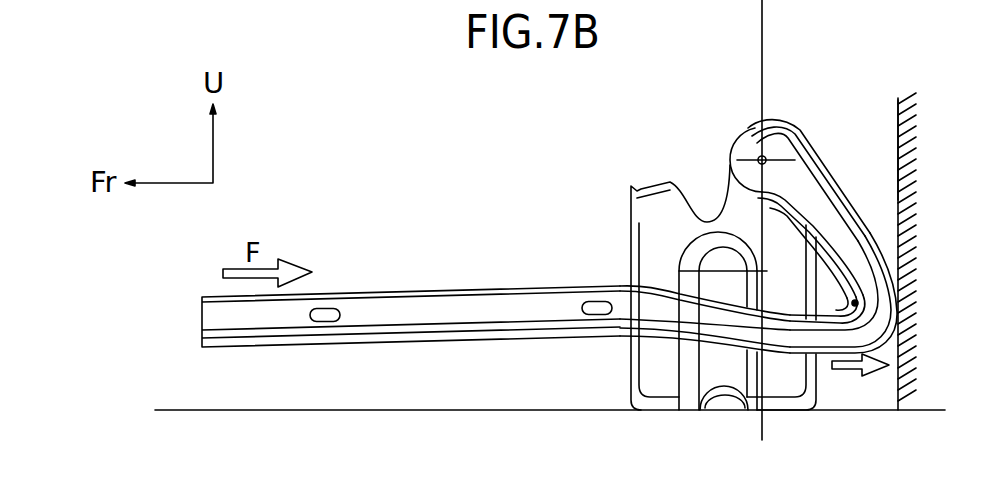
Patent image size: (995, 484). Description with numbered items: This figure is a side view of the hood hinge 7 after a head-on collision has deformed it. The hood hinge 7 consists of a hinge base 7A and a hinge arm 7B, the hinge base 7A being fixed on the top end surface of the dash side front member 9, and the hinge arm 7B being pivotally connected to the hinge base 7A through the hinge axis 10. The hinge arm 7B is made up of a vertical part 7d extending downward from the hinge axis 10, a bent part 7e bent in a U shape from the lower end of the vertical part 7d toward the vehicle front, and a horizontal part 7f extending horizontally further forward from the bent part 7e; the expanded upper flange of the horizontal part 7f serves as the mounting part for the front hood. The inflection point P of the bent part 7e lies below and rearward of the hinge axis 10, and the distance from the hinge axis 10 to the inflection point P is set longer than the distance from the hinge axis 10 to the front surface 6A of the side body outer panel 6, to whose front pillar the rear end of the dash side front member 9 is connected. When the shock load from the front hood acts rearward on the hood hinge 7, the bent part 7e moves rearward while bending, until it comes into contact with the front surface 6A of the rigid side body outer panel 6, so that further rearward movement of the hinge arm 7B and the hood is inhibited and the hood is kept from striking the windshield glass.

The side body outer panel 6 is at (899, 109).
The front surface of the side body outer panel 6A is at (900, 137).
The hood hinge 7 is at (610, 172).
The hinge base 7A is at (647, 370).
The hinge arm 7B is at (562, 286).
The vertical part 7d is at (850, 192).
The bent part 7e is at (893, 331).
The horizontal part 7f is at (493, 303).
The dash side front member 9 is at (541, 410).
The hinge axis 10 is at (757, 157).
The inflection point P is at (855, 303).